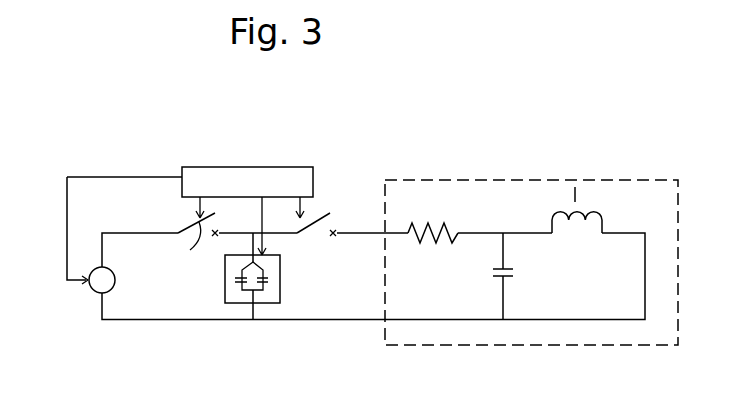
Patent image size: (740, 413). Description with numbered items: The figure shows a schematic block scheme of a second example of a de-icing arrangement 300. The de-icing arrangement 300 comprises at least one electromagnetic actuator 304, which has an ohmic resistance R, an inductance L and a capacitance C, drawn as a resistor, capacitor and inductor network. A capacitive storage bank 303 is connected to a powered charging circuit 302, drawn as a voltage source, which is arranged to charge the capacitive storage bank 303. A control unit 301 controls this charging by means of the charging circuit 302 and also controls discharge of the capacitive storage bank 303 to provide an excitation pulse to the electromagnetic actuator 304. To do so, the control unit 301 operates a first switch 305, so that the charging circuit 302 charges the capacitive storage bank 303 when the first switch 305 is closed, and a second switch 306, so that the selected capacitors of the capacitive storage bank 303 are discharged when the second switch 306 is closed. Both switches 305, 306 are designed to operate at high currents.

The de-icing arrangement 300 is at (537, 146).
The control unit 301 is at (232, 166).
The charging circuit 302 is at (91, 289).
The capacitive storage bank 303 is at (265, 307).
The electromagnetic actuator 304 is at (535, 347).
The first switch 305 is at (187, 246).
The second switch 306 is at (326, 213).